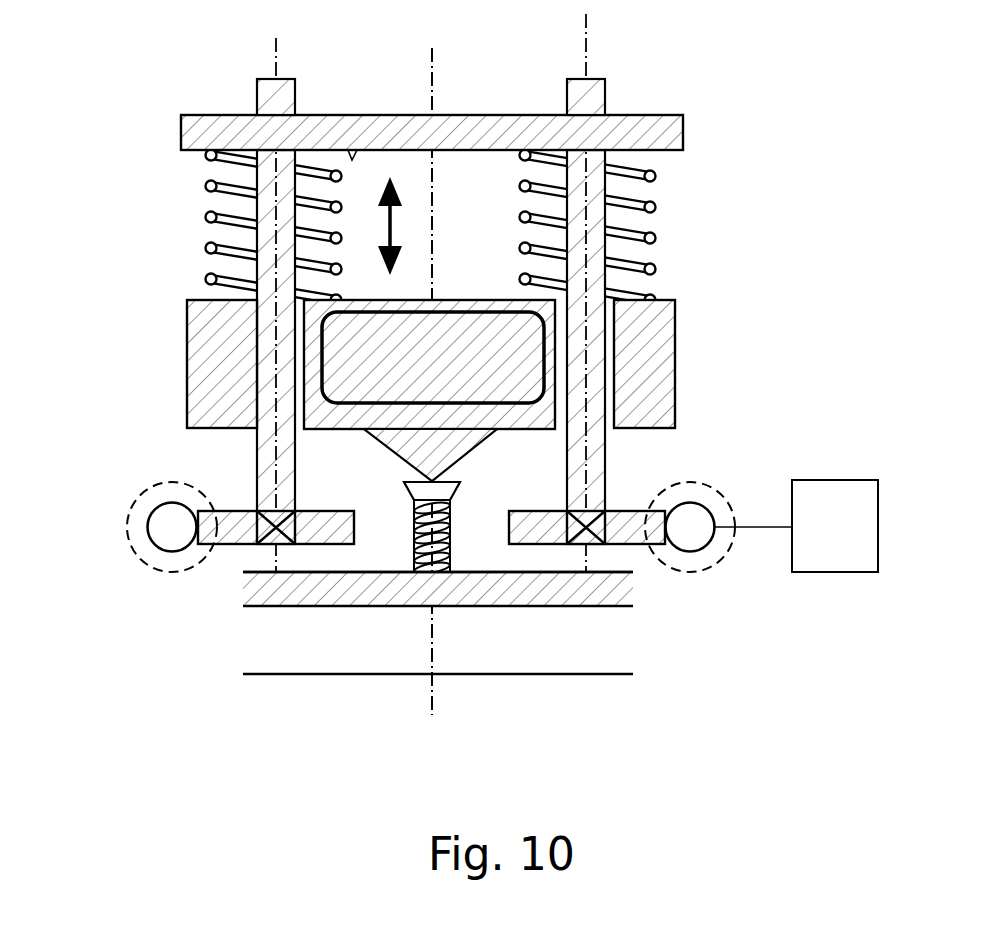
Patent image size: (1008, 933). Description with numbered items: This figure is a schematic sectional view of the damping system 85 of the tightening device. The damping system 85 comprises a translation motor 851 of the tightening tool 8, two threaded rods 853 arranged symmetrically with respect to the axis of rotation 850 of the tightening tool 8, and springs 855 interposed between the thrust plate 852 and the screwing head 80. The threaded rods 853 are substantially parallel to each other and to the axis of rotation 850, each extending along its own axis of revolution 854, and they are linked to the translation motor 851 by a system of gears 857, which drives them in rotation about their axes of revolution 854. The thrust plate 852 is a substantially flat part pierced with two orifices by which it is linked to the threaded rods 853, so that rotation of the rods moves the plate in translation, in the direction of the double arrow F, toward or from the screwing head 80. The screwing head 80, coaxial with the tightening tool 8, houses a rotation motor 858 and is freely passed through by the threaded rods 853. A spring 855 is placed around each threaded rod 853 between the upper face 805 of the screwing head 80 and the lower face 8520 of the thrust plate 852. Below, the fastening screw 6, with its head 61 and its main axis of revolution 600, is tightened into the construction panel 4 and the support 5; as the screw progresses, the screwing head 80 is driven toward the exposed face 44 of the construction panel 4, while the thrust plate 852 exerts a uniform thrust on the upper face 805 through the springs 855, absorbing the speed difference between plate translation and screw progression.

The damping system 85 is at (153, 110).
The axis of rotation 850 is at (437, 370).
The main axis of revolution 600 is at (472, 370).
The thrust plate 852 is at (650, 115).
The lower face 8520 is at (342, 115).
The threaded rods 853 is at (258, 103).
The axis of revolution 854 is at (435, 297).
The spring 855 is at (205, 180).
The upper face 805 is at (443, 297).
The screwing head 80 is at (667, 355).
The rotation motor 858 is at (258, 425).
The system of gears 857 is at (157, 528).
The translation motor 851 is at (826, 580).
The tightening tool 8 is at (388, 462).
The head 61 is at (445, 488).
The fastening screw 6 is at (458, 542).
The construction panel 4 is at (282, 598).
The exposed face 44 is at (328, 557).
The support 5 is at (492, 653).